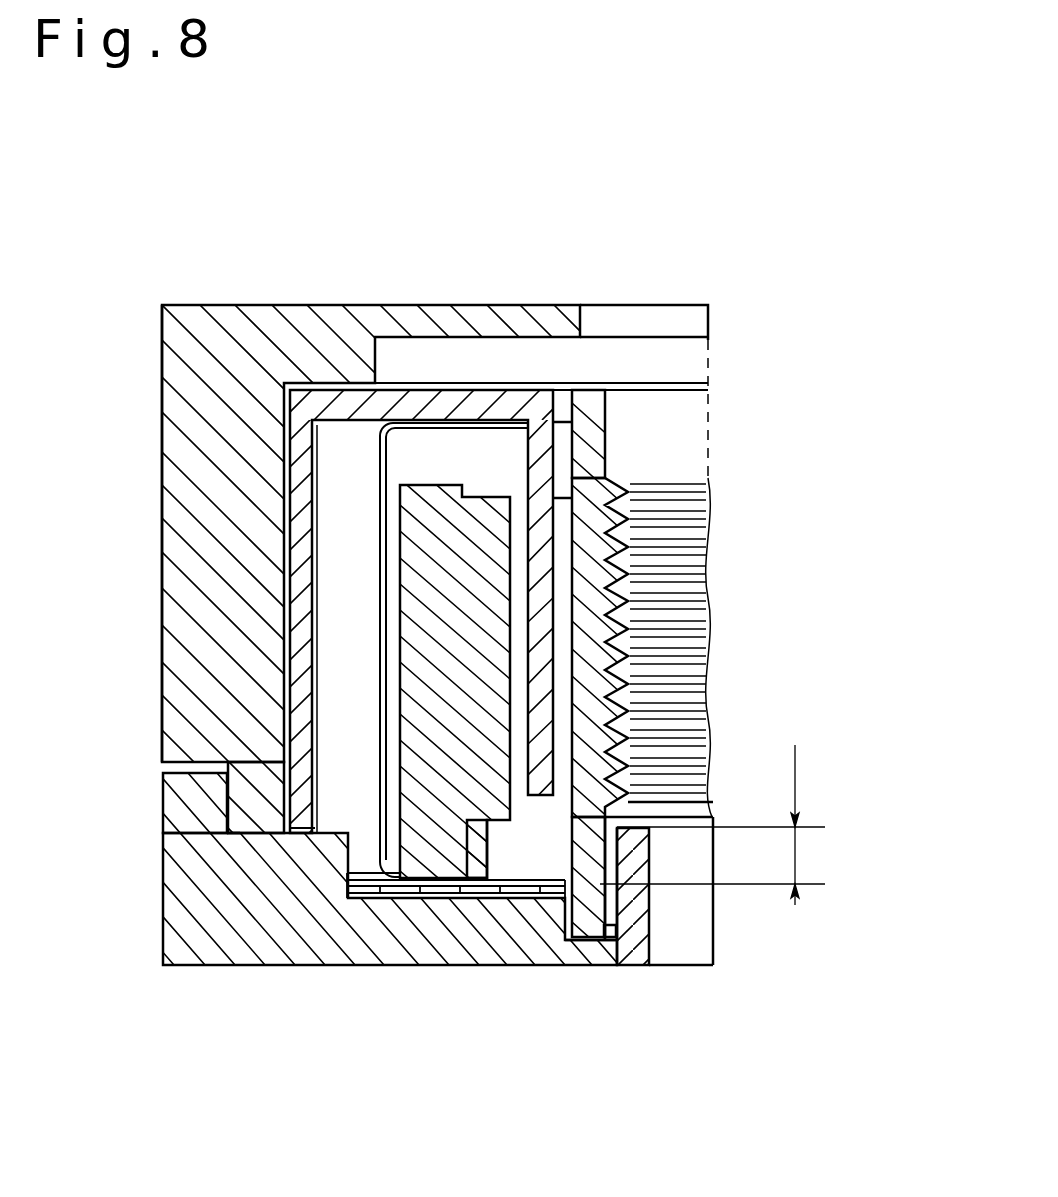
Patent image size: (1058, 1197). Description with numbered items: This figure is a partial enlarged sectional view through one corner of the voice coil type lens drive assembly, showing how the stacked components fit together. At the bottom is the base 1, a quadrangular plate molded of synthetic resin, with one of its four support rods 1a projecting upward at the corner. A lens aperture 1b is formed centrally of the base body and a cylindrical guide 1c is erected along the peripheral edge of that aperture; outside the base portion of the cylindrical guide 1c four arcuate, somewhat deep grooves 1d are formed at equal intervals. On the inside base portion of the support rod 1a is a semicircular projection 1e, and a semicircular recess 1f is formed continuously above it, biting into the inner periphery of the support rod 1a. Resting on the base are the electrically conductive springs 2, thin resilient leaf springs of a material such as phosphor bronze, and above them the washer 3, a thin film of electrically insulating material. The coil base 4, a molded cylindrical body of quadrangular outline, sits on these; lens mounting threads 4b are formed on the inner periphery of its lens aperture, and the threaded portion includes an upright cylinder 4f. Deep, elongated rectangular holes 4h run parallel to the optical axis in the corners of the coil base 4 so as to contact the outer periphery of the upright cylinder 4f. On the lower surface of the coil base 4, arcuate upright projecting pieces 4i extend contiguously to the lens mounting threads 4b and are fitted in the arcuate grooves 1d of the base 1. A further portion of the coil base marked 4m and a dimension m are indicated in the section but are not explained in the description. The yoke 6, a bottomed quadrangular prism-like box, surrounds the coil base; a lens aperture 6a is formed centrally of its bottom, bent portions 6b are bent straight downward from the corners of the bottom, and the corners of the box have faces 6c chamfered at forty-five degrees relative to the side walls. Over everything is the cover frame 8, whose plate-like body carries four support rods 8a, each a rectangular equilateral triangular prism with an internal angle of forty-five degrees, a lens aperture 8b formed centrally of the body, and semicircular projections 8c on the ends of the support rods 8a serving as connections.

The base 1 is at (262, 965).
The support rods 1a is at (182, 797).
The lens aperture 1b is at (676, 932).
The cylindrical guide 1c is at (652, 905).
The arcuate grooves 1d is at (620, 945).
The semicircular projections 1e is at (377, 870).
The semicircular recesses 1f is at (228, 845).
The electrically conductive springs 2 is at (470, 901).
The washer 3 is at (545, 897).
The coil base 4 is at (552, 455).
The lens mounting threads 4b is at (640, 480).
The upright cylinder 4f is at (593, 442).
The rectangular holes 4h is at (528, 845).
The arcuate upright projecting pieces 4i is at (676, 932).
The lower leg portion 4m is at (650, 848).
The yoke 6 is at (284, 444).
The lens aperture 6a is at (565, 408).
The bent portions 6b is at (572, 455).
The chamfered faces 6c is at (300, 842).
The cover frame 8 is at (277, 342).
The support rods 8a is at (170, 540).
The lens aperture 8b is at (598, 322).
The semicircular projections 8c is at (254, 822).
The dimension m is at (712, 806).